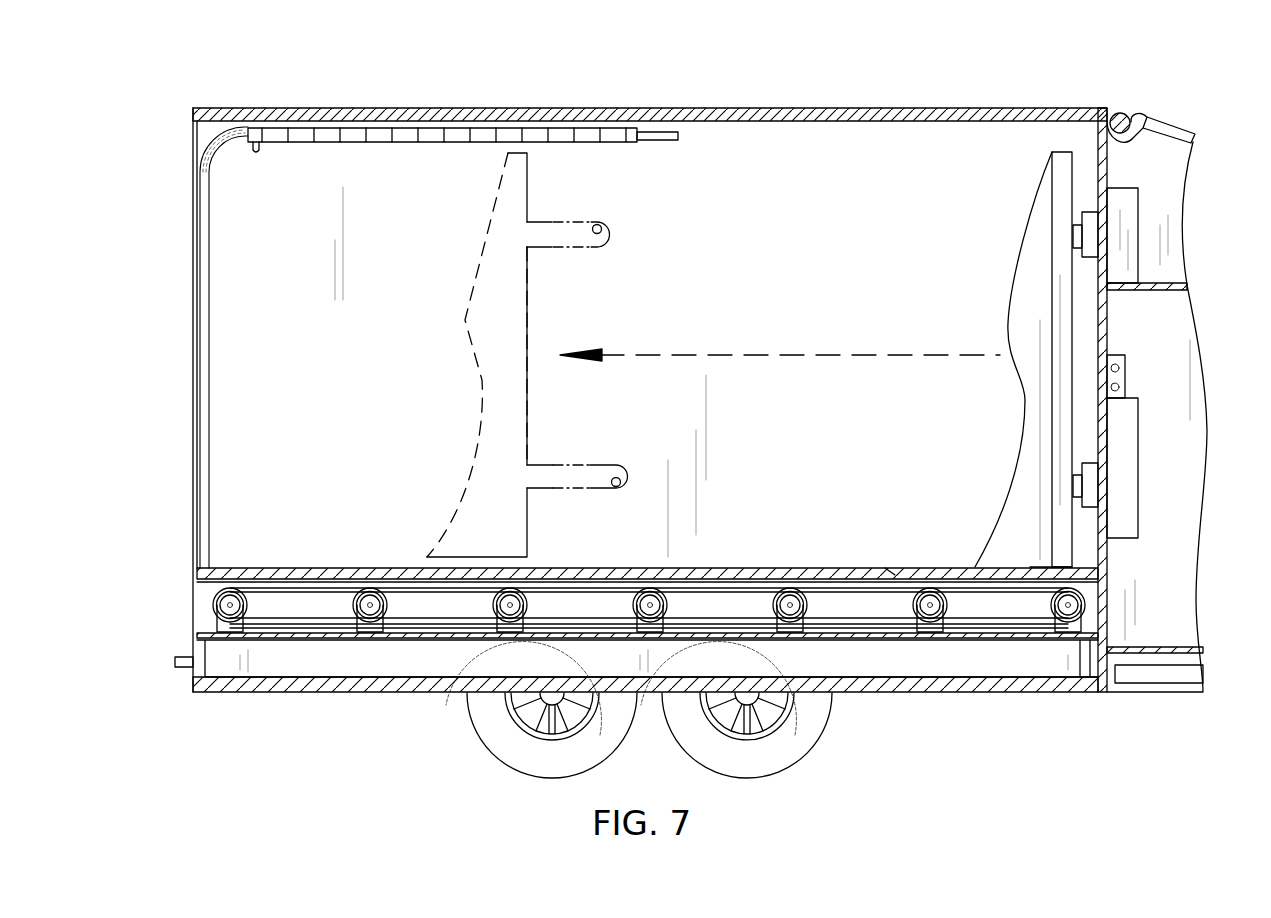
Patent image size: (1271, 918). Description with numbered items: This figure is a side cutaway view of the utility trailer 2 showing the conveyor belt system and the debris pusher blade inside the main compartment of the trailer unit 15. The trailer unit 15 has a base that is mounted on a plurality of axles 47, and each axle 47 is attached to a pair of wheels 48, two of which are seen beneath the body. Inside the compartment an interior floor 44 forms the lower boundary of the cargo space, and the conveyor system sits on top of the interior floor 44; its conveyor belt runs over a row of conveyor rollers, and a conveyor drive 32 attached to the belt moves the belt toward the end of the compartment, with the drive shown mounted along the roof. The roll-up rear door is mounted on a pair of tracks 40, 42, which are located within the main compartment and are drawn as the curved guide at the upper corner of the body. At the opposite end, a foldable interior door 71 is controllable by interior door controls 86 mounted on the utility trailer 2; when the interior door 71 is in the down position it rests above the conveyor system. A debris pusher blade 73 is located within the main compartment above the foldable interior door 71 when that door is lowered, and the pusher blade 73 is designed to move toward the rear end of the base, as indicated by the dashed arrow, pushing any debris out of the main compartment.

The utility trailer 2 is at (668, 88).
The trailer unit 15 is at (592, 110).
The conveyor drive 32 is at (280, 128).
The track 40 is at (176, 321).
The track 42 is at (215, 150).
The debris pusher blade 73 is at (1043, 187).
The interior door controls 86 is at (1108, 353).
The foldable interior door 71 is at (890, 570).
The interior floor 44 is at (250, 638).
The axle 47 is at (550, 694).
The wheel 48 is at (510, 760).